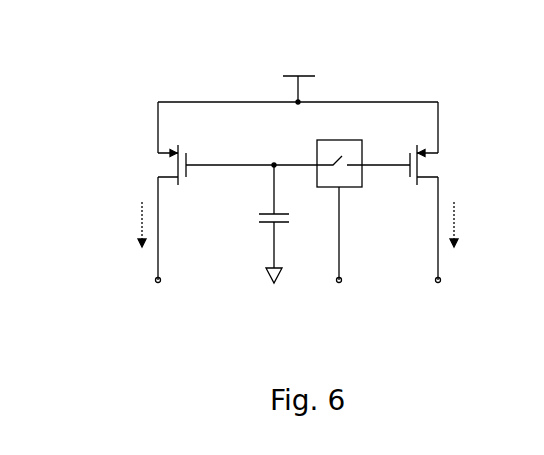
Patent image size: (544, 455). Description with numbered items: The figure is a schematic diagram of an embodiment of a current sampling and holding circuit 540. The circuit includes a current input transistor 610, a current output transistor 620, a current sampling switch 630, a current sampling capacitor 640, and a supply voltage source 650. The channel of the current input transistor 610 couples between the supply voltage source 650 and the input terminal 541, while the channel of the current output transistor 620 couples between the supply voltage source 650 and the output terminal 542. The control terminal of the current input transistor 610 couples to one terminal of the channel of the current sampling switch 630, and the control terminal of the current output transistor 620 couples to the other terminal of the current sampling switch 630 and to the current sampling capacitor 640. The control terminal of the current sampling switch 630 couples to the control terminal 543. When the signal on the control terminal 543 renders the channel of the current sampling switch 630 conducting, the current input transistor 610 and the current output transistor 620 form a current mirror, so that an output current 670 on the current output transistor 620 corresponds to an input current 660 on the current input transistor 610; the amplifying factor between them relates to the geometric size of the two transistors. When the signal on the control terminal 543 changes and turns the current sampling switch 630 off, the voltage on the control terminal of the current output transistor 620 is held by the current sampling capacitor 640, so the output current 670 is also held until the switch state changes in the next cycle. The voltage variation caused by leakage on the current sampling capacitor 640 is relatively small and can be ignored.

The current sampling and holding circuit 540 is at (72, 47).
The current input transistor 610 is at (440, 165).
The current output transistor 620 is at (158, 164).
The current sampling switch 630 is at (358, 190).
The current sampling capacitor 640 is at (259, 218).
The supply voltage source 650 is at (300, 73).
The input current 660 is at (456, 222).
The output current 670 is at (140, 222).
The input terminal 541 is at (438, 284).
The output terminal 542 is at (158, 284).
The control terminal 543 is at (339, 284).